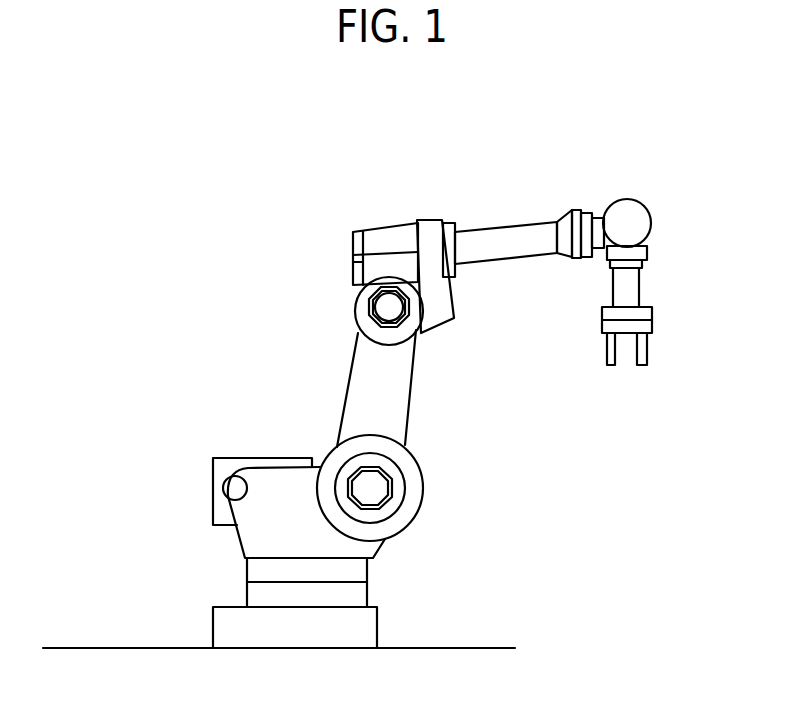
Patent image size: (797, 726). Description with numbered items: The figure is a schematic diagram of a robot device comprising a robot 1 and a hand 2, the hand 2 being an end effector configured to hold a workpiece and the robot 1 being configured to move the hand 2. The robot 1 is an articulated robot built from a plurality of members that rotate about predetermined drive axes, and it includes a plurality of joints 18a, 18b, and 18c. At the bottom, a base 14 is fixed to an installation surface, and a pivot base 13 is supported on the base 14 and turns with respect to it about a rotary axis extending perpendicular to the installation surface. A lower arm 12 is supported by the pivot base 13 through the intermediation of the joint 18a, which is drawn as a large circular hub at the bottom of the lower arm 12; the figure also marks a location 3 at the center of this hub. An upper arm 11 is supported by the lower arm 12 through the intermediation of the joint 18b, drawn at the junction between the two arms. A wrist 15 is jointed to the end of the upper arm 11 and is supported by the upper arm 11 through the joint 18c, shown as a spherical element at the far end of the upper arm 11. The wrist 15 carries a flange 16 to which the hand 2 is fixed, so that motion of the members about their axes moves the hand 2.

The robot 1 is at (430, 210).
The hand 2 is at (602, 325).
The rotation axis 3 is at (374, 492).
The upper arm 11 is at (505, 237).
The lower arm 12 is at (366, 353).
The pivot base 13 is at (252, 520).
The base 14 is at (226, 625).
The wrist 15 is at (633, 290).
The flange 16 is at (602, 317).
The joint 18a is at (346, 455).
The joint 18b is at (368, 303).
The joint 18c is at (637, 221).